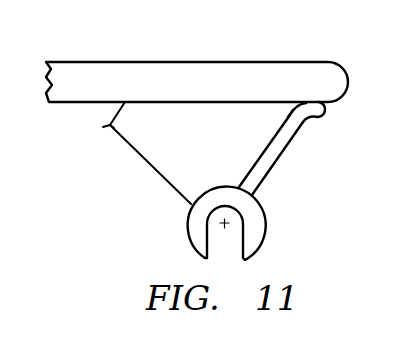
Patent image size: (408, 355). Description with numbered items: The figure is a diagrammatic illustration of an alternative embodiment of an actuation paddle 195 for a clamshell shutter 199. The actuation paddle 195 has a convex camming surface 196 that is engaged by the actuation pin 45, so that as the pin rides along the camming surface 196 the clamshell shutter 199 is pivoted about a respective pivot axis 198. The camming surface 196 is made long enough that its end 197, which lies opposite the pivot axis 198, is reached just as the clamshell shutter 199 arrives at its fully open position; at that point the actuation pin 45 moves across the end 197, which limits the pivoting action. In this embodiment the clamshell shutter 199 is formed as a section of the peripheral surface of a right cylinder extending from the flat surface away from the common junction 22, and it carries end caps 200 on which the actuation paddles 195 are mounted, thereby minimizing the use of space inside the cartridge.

The actuation pin 45 is at (162, 61).
The clamshell shutter 199 is at (112, 122).
The common junction 22 is at (102, 127).
The end caps 200 is at (138, 153).
The actuation paddle 195 is at (282, 153).
The convex camming surface 196 is at (298, 104).
The end of the camming surface 197 is at (323, 107).
The pivot axis 198 is at (222, 220).